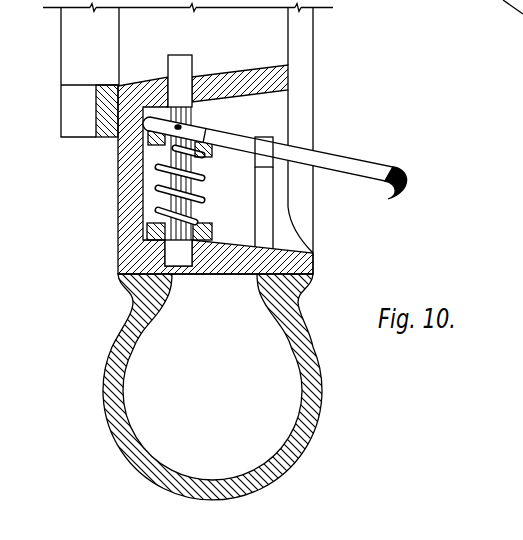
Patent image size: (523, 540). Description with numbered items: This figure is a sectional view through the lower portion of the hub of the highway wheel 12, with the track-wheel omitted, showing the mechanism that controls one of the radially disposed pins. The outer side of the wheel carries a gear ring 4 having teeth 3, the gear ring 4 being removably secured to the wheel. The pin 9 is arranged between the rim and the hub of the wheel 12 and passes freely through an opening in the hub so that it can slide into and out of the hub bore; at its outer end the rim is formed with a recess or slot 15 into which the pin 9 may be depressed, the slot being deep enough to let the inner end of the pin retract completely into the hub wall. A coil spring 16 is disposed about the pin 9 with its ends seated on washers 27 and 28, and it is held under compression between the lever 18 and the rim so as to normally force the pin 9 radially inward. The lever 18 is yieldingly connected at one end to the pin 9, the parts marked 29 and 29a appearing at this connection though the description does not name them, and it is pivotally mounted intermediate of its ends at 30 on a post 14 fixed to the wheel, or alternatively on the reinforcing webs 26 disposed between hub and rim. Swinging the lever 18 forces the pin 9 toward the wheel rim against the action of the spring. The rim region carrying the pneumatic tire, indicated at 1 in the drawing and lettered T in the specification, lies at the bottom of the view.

The grenade body 1 is at (122, 403).
The teeth 3 is at (73, 130).
The gear ring 4 is at (105, 133).
The pin 9 is at (185, 66).
The highway wheel 12 is at (288, 77).
The post 14 is at (268, 206).
The slot 15 is at (183, 258).
The coil spring 16 is at (200, 177).
The lever 18 is at (383, 168).
The reenforcing webs 26 is at (288, 118).
The washer 27 is at (200, 223).
The washer 28 is at (207, 150).
The collar 29 is at (192, 113).
The pin 29a is at (183, 127).
The pivot 30 is at (265, 145).